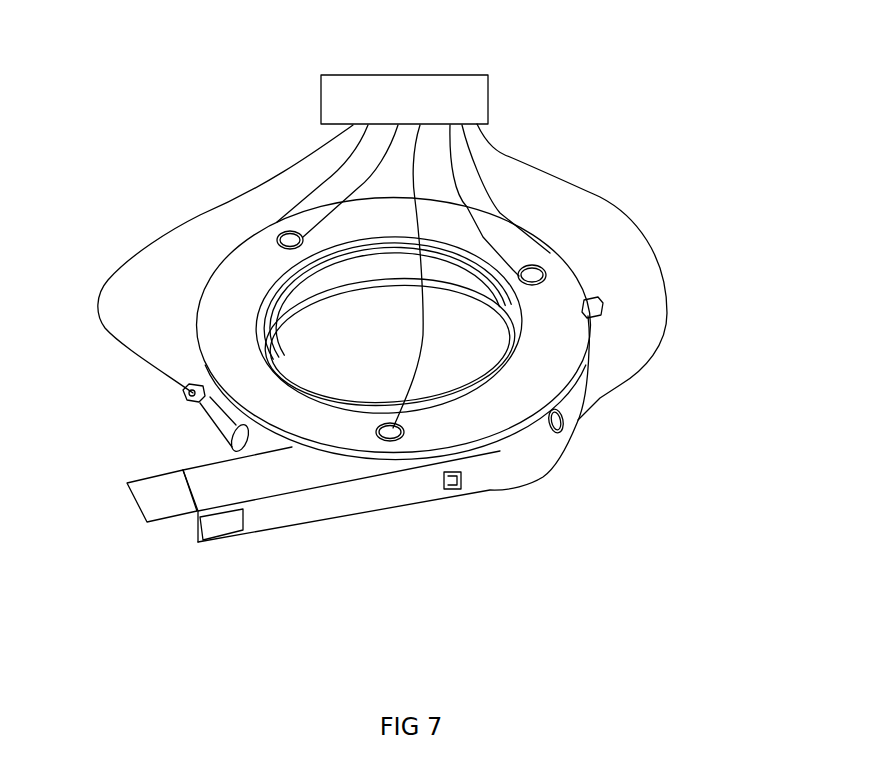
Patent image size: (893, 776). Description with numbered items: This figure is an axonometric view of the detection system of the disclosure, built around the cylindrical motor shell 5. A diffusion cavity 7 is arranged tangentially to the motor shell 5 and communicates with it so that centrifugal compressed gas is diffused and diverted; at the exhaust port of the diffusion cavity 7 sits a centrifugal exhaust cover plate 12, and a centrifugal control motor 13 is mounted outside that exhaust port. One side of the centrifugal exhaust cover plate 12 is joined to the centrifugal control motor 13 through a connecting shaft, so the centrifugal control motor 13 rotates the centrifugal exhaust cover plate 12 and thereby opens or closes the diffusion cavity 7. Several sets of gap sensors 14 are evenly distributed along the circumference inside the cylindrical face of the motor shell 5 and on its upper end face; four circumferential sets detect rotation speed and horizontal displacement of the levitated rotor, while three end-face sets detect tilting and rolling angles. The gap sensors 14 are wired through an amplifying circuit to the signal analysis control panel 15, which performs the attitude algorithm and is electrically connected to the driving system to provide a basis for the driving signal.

The motor shell 5 is at (560, 293).
The diffusion cavity 7 is at (262, 558).
The centrifugal exhaust cover plate 12 is at (104, 445).
The centrifugal control motor 13 is at (82, 590).
The gap sensor 14 is at (537, 283).
The signal analysis control panel 15 is at (428, 102).